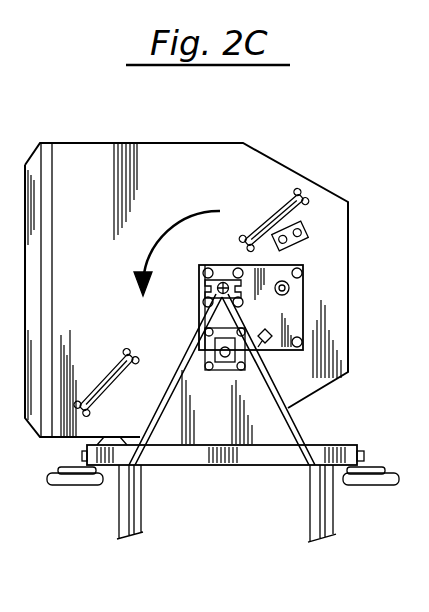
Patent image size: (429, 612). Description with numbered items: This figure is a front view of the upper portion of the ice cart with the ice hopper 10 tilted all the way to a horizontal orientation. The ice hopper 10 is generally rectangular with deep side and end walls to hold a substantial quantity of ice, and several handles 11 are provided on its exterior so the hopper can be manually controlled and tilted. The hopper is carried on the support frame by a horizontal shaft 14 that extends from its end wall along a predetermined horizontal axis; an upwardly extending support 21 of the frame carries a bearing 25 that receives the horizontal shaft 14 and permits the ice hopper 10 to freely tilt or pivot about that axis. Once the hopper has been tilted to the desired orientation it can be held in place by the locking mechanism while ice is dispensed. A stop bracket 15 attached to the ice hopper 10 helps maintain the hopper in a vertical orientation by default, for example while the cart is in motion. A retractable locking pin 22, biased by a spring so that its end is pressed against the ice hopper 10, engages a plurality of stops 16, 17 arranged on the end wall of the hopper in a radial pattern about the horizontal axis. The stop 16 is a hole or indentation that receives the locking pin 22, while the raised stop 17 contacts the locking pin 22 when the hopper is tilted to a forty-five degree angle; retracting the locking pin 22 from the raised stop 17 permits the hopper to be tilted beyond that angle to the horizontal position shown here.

The ice hopper 10 is at (103, 301).
The handle 11 is at (274, 208).
The horizontal shaft 14 is at (224, 283).
The stop bracket 15 is at (300, 248).
The stop 16 is at (290, 290).
The raised stop 17 is at (270, 345).
The support 21 is at (233, 415).
The retractable locking pin 22 is at (222, 350).
The bearing 25 is at (217, 285).